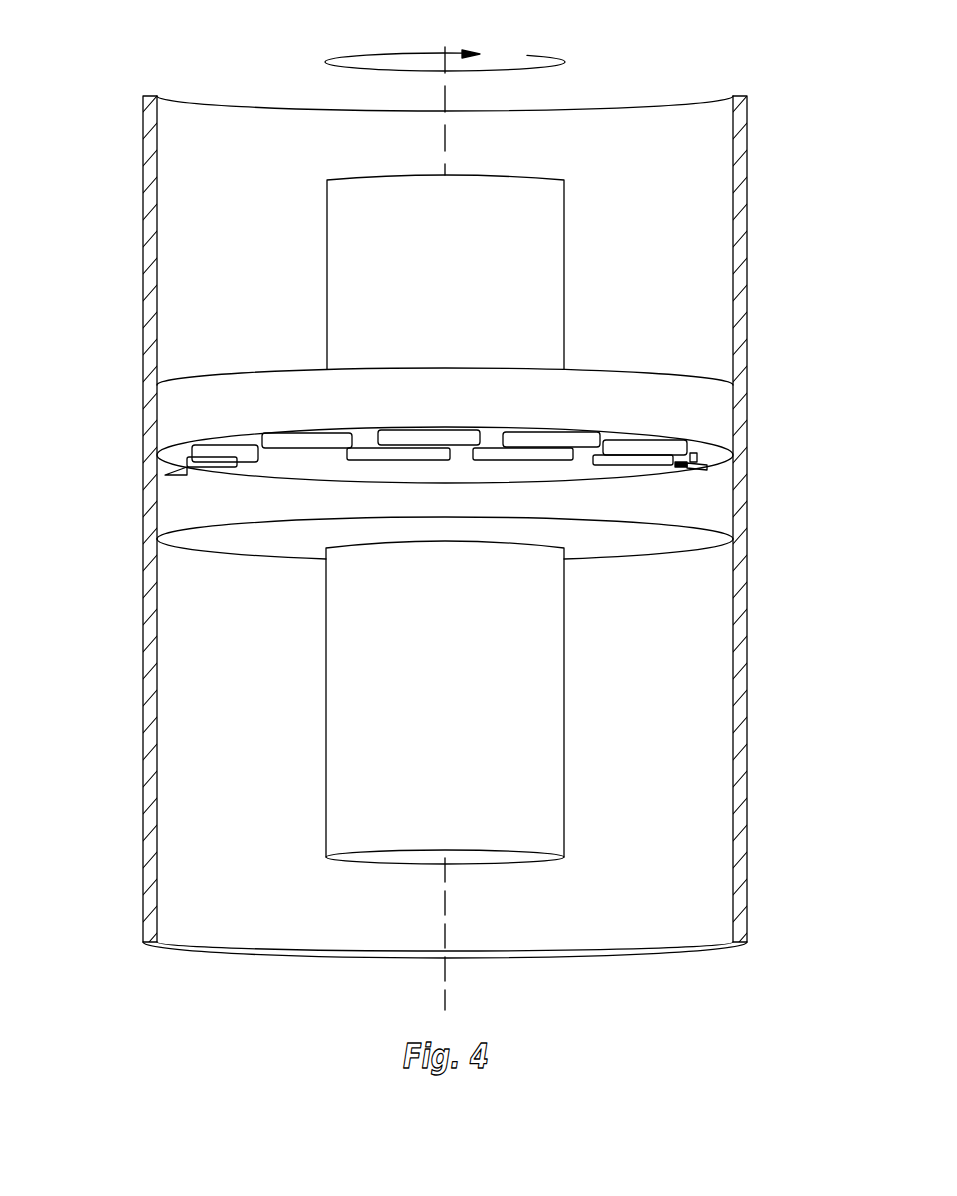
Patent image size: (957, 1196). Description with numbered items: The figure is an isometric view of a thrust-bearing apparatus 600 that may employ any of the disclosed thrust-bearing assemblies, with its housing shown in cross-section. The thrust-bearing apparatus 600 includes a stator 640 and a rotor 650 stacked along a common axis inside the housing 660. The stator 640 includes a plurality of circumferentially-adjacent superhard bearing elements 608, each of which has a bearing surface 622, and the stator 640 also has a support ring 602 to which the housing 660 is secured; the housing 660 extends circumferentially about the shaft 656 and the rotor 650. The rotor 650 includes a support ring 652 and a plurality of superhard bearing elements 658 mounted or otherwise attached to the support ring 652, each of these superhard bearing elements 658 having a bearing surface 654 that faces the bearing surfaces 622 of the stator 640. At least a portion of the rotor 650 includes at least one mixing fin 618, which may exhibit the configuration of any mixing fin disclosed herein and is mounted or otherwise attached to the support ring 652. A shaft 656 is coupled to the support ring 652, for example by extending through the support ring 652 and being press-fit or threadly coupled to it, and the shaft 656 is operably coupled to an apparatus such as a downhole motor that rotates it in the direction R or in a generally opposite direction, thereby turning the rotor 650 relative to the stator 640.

The thrust-bearing apparatus 600 is at (440, 517).
The support ring 602 is at (710, 433).
The superhard bearing elements 608 is at (547, 437).
The mixing fin 618 is at (449, 468).
The bearing surface 622 is at (683, 477).
The stator 640 is at (740, 403).
The rotor 650 is at (742, 523).
The support ring 652 is at (710, 504).
The bearing surface 654 is at (383, 445).
The shaft 656 is at (545, 253).
The superhard bearing elements 658 is at (372, 458).
The housing 660 is at (748, 770).